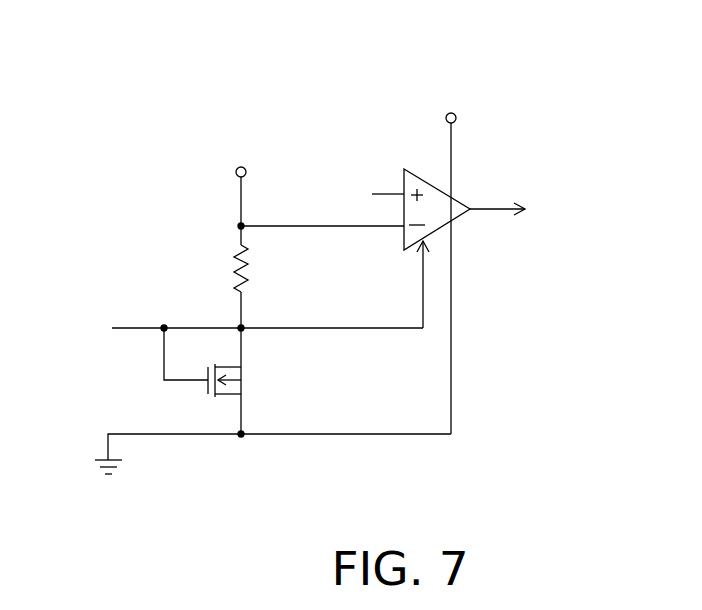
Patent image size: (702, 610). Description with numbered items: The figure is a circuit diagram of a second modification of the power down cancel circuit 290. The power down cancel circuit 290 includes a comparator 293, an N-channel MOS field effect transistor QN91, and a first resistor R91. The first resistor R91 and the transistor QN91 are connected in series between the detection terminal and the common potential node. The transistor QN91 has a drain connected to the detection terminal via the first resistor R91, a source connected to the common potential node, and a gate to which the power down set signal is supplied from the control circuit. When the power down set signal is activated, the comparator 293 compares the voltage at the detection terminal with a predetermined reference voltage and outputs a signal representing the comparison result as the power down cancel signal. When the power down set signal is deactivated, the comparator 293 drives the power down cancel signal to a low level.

The power down cancel circuit 290 is at (372, 33).
The comparator 293 is at (430, 184).
The first resistor R91 is at (266, 268).
The N-ch MOS field effect transistor QN91 is at (261, 380).